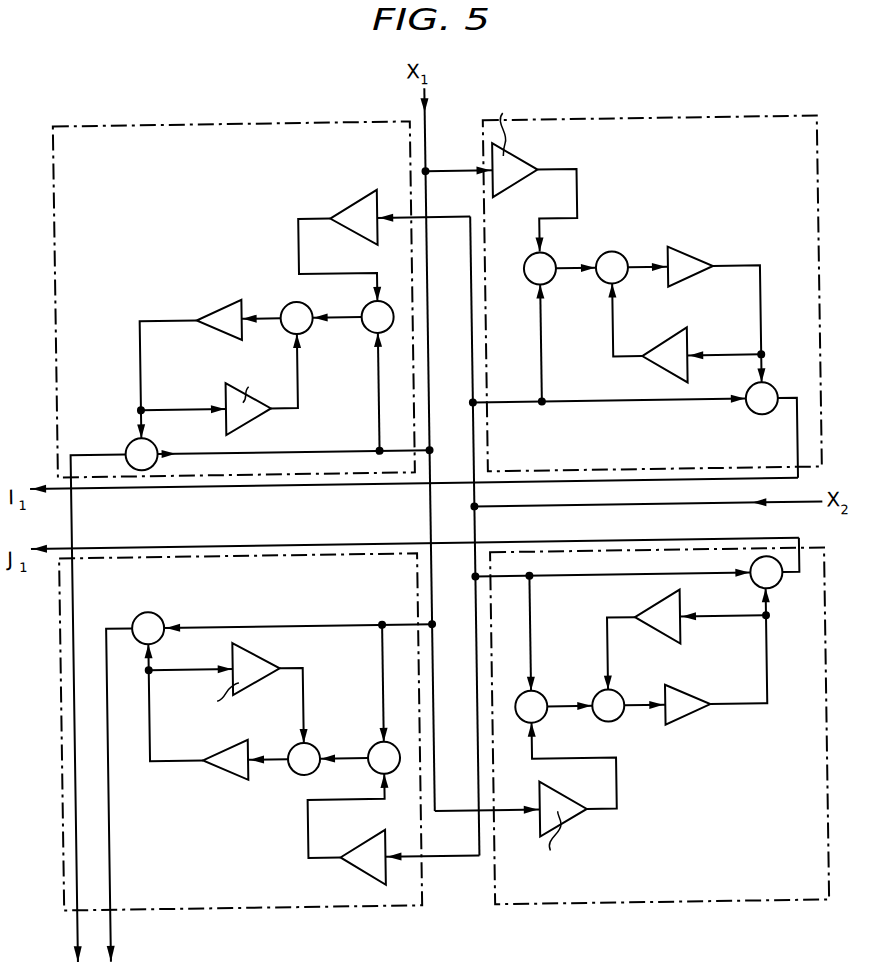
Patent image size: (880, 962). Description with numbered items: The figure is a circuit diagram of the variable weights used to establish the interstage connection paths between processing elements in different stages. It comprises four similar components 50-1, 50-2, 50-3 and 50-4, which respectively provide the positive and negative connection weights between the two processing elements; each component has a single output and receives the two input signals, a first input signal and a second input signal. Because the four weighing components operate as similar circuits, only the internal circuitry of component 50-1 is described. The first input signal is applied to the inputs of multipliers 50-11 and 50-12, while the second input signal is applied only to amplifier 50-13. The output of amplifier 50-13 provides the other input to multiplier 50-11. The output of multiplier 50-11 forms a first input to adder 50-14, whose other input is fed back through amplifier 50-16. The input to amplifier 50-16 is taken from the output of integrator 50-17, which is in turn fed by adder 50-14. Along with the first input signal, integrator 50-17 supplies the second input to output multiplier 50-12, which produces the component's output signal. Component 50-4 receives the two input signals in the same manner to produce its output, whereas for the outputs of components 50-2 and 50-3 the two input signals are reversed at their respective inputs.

The component 50-1 is at (147, 237).
The component 50-2 is at (710, 217).
The component 50-3 is at (739, 807).
The component 50-4 is at (278, 822).
The multiplier 50-11 is at (364, 331).
The output multiplier 50-12 is at (130, 440).
The amplifier 50-13 is at (358, 203).
The adder 50-14 is at (290, 300).
The amplifier 50-16 is at (258, 420).
The integrator 50-17 is at (222, 304).